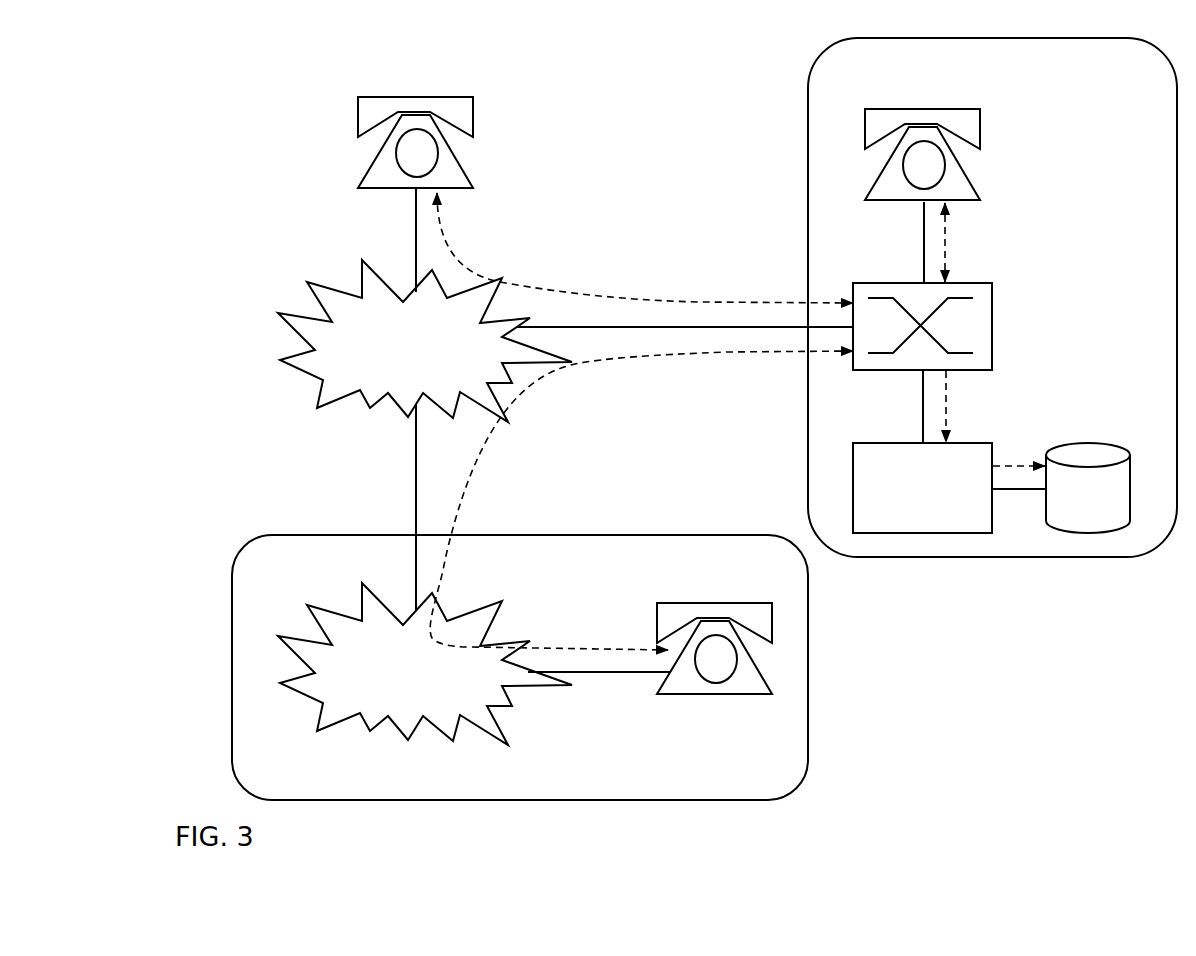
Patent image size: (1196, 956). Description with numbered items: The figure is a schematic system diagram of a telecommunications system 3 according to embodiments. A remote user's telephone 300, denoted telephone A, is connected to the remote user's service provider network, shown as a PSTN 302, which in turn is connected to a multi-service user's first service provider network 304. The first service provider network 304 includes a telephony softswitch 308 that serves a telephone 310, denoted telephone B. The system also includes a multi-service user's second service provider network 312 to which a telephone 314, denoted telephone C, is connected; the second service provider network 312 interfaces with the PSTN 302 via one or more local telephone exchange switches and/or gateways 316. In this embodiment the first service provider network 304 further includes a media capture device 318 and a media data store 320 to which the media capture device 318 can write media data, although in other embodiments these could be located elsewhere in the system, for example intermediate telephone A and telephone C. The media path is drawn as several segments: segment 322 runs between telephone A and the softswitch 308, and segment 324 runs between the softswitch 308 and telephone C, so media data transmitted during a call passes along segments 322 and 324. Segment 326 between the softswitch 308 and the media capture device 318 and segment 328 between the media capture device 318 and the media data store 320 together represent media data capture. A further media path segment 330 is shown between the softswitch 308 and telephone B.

The telecommunications system 3 is at (255, 98).
The telephone 300 is at (409, 114).
The PSTN 302 is at (425, 325).
The first service provider network 304 is at (956, 297).
The telephony softswitch 308 is at (910, 297).
The telephone 310 is at (921, 125).
The second service provider network 312 is at (520, 639).
The telephone 314 is at (714, 621).
The local telephone exchange switches and/or gateways 316 is at (425, 646).
The media capture device 318 is at (906, 459).
The media data store 320 is at (1100, 459).
The media path segment 322 is at (645, 248).
The media path segment 324 is at (641, 500).
The media path segment 326 is at (992, 406).
The media path segment 328 is at (1034, 436).
The media path segment 330 is at (991, 242).